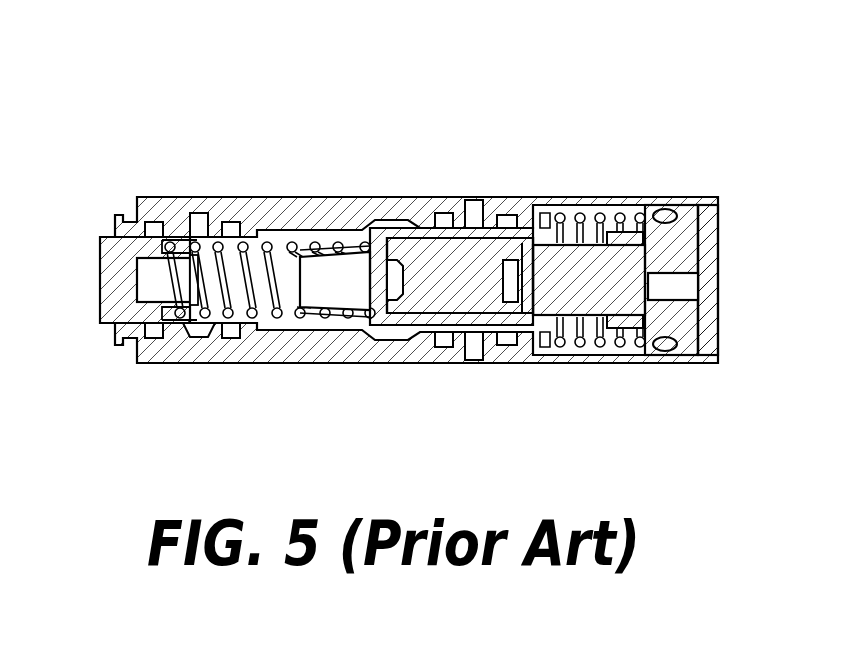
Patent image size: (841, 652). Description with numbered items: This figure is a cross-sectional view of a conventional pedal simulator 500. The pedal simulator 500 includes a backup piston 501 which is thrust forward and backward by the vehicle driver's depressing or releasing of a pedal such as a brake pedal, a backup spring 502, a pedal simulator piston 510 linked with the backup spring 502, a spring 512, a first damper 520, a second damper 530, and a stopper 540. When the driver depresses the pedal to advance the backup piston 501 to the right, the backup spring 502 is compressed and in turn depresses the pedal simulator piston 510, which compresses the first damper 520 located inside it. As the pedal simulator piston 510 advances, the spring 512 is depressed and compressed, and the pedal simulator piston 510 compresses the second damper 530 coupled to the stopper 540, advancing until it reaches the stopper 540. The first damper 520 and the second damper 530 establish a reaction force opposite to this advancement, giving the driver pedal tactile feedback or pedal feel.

The conventional pedal simulator 500 is at (115, 74).
The backup piston 501 is at (108, 272).
The backup spring 502 is at (297, 302).
The pedal simulator piston 510 is at (395, 322).
The spring 512 is at (592, 340).
The first damper 520 is at (425, 250).
The second damper 530 is at (630, 238).
The stopper 540 is at (680, 330).